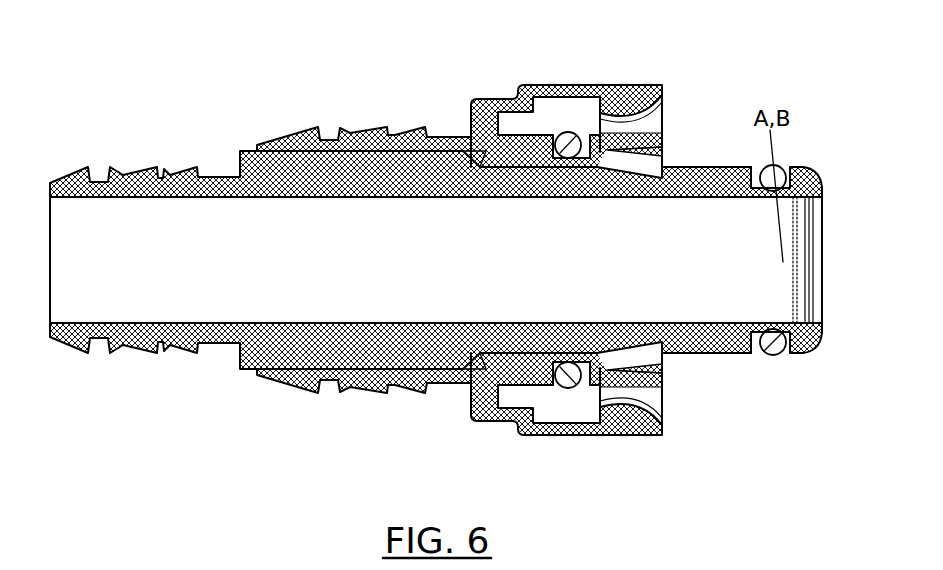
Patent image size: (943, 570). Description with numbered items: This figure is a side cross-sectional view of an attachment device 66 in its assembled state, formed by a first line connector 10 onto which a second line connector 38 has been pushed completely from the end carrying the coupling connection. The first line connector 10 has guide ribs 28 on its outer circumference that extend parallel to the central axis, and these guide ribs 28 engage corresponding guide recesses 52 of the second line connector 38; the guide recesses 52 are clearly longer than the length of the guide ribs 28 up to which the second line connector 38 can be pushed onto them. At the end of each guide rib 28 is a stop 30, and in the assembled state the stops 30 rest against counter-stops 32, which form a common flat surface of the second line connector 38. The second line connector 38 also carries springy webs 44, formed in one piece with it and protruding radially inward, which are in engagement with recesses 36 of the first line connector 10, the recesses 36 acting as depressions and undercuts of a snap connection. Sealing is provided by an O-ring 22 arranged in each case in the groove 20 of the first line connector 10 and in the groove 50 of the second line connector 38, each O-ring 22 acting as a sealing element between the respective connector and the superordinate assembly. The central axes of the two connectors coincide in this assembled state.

The first line connector 10 is at (148, 364).
The annular groove 20 is at (791, 352).
The O-ring 22 is at (566, 140).
The guide ribs 28 is at (330, 157).
The stop 30 is at (246, 150).
The counter-stop 32 is at (262, 144).
The recesses 36 is at (664, 176).
The second line connector 38 is at (280, 393).
The springy webs 44 is at (655, 163).
The groove 50 is at (552, 142).
The guide recesses 52 is at (477, 158).
The attachment device 66 is at (748, 75).